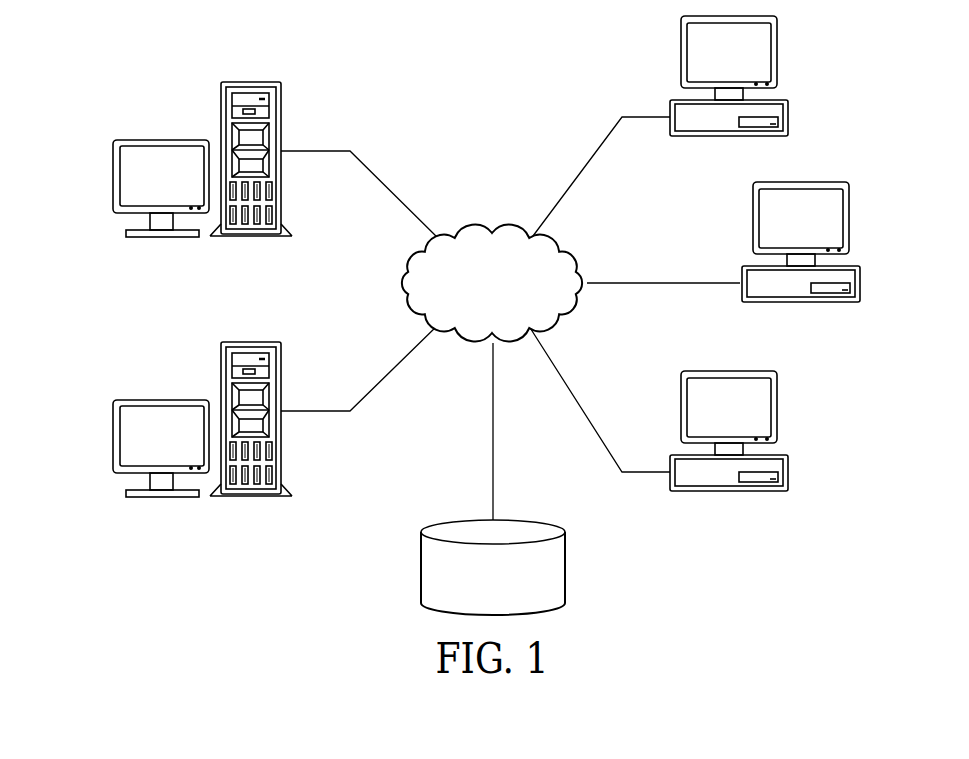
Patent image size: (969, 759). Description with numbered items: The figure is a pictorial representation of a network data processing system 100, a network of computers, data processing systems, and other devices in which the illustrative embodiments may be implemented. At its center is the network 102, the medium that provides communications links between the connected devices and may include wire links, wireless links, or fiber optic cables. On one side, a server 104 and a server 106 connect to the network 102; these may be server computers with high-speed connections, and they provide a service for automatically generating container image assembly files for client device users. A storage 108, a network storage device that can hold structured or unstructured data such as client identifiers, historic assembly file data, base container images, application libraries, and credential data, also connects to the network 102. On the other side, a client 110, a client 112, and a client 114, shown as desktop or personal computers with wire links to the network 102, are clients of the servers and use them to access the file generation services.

The network data processing system 100 is at (377, 58).
The network 102 is at (467, 230).
The server 104 is at (113, 177).
The server 106 is at (113, 436).
The storage 108 is at (421, 565).
The client 110 is at (790, 108).
The client 112 is at (860, 290).
The client 114 is at (788, 477).